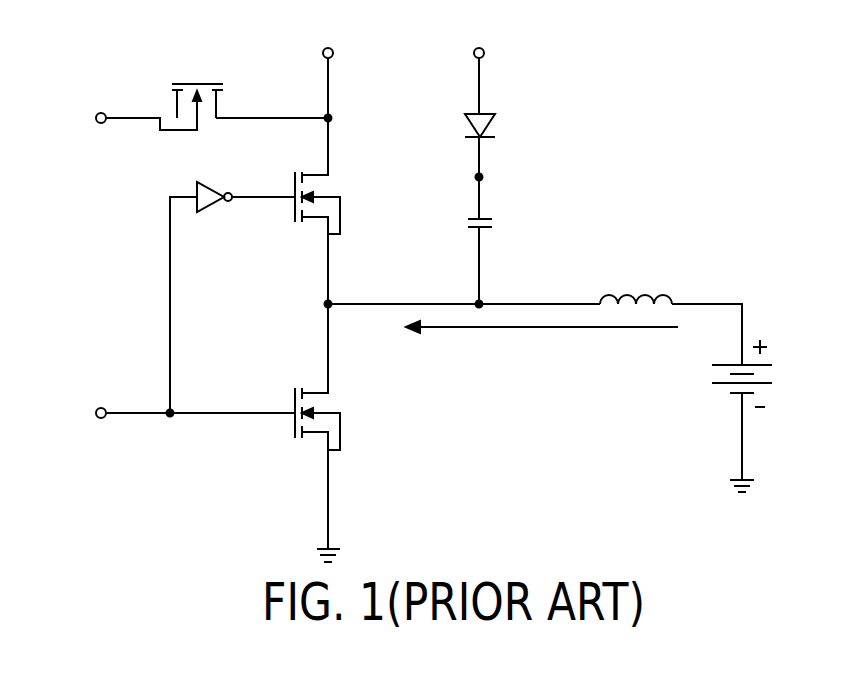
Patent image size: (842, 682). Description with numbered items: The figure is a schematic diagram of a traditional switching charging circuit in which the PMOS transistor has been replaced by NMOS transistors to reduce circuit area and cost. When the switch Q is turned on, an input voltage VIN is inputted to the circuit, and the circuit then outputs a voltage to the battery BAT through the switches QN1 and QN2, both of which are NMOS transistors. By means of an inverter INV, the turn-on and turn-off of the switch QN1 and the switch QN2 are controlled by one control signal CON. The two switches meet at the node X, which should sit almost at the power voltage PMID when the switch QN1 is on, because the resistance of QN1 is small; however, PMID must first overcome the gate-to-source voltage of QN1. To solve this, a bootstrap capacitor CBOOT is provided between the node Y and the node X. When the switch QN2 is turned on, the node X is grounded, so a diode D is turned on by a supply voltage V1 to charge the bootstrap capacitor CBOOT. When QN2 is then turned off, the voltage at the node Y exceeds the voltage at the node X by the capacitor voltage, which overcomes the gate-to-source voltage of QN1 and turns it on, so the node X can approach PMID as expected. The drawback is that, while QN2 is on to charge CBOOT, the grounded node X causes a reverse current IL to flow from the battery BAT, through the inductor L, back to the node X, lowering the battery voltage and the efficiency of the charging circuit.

The input voltage VIN is at (138, 99).
The switch Q is at (250, 81).
The power voltage PMID is at (327, 95).
The inverter INV is at (232, 280).
The switch QN1 is at (348, 211).
The node X is at (451, 304).
The switch QN2 is at (348, 433).
The control signal CON is at (184, 395).
The supply voltage V1 is at (479, 64).
The diode D is at (493, 164).
The node Y is at (466, 177).
The bootstrap capacitor CBOOT is at (523, 257).
The reverse current IL is at (542, 344).
The inductor L is at (671, 312).
The battery BAT is at (774, 416).